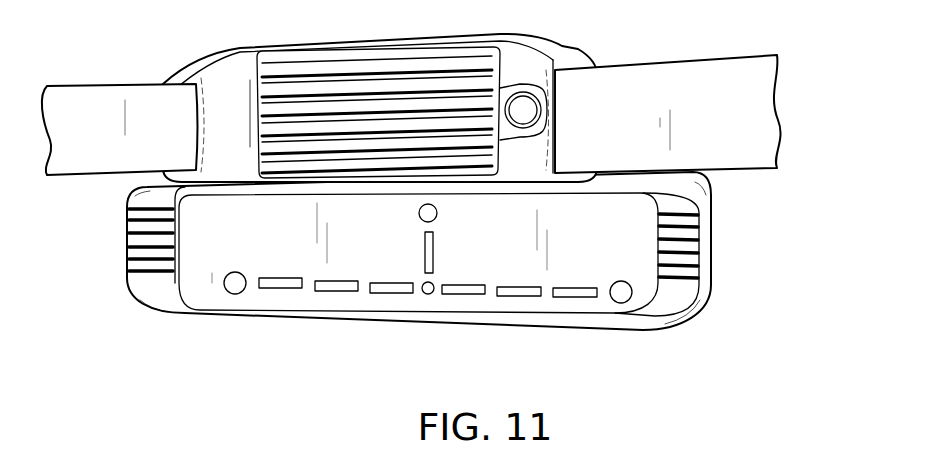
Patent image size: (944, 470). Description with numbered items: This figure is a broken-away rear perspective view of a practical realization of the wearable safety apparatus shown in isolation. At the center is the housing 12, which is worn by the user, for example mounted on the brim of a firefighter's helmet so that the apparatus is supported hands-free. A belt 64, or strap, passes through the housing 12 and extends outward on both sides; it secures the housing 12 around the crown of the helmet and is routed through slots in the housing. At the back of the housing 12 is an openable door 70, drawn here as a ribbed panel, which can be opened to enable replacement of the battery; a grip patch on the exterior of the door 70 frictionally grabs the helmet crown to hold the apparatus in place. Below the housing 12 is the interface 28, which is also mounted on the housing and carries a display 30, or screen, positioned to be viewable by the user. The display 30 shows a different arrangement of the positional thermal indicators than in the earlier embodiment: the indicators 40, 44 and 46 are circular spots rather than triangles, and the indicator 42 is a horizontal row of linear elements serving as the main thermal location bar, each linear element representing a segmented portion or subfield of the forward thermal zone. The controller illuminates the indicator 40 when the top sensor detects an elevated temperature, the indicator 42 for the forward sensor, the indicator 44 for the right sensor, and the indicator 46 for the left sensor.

The housing 12 is at (217, 58).
The interface 28 is at (692, 227).
The display 30 is at (212, 277).
The positional thermal indicator 40 is at (429, 214).
The positional thermal indicator 42 is at (265, 322).
The positional thermal indicator 44 is at (620, 282).
The positional thermal indicator 46 is at (238, 274).
The belt 64 is at (106, 98).
The openable door 70 is at (388, 62).